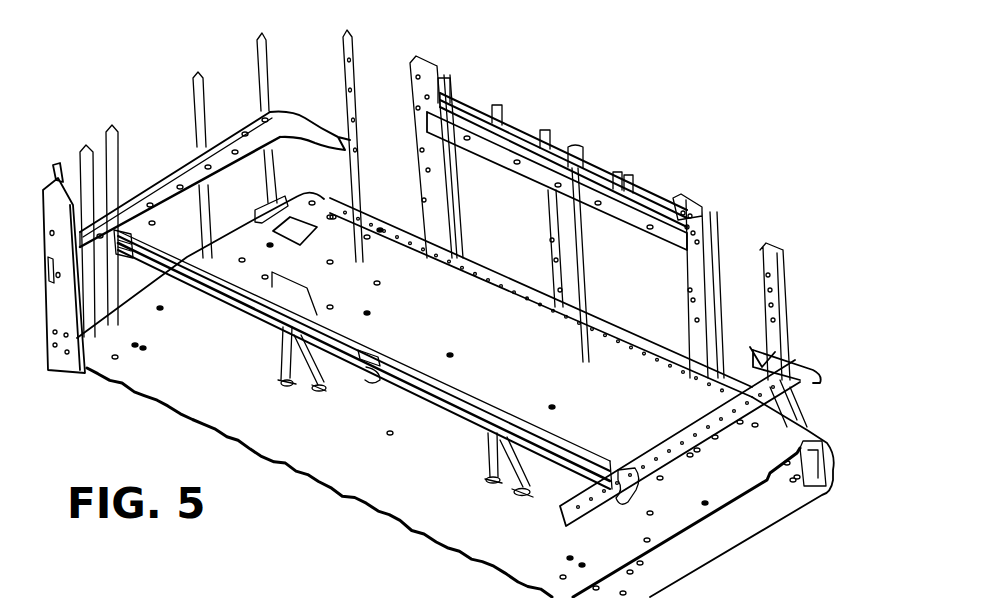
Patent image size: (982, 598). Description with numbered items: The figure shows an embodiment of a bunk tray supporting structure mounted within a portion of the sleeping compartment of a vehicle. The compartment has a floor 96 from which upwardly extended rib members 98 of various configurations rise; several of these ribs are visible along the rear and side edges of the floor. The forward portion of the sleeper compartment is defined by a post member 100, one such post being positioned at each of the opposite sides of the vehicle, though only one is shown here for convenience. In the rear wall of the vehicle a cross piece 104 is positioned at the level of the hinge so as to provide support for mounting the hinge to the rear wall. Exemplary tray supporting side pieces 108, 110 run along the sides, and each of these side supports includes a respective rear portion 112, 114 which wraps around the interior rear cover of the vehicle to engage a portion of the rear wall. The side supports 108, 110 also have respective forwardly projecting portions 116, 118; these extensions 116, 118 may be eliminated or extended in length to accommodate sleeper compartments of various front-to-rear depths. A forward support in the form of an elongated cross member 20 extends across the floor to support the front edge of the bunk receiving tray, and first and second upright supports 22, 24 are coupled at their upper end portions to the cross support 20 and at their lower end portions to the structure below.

The elongated cross member 20 is at (407, 368).
The first upright support 22 is at (507, 470).
The second upright support 24 is at (300, 368).
The floor 96 is at (707, 517).
The rib members 98 is at (265, 80).
The post member 100 is at (63, 310).
The cross piece 104 is at (633, 213).
The tray supporting side piece 108 is at (703, 437).
The tray supporting side piece 110 is at (230, 140).
The rear portion 112 is at (777, 347).
The rear portion 114 is at (296, 133).
The forwardly projecting portion 116 is at (590, 500).
The forwardly projecting portion 118 is at (81, 208).